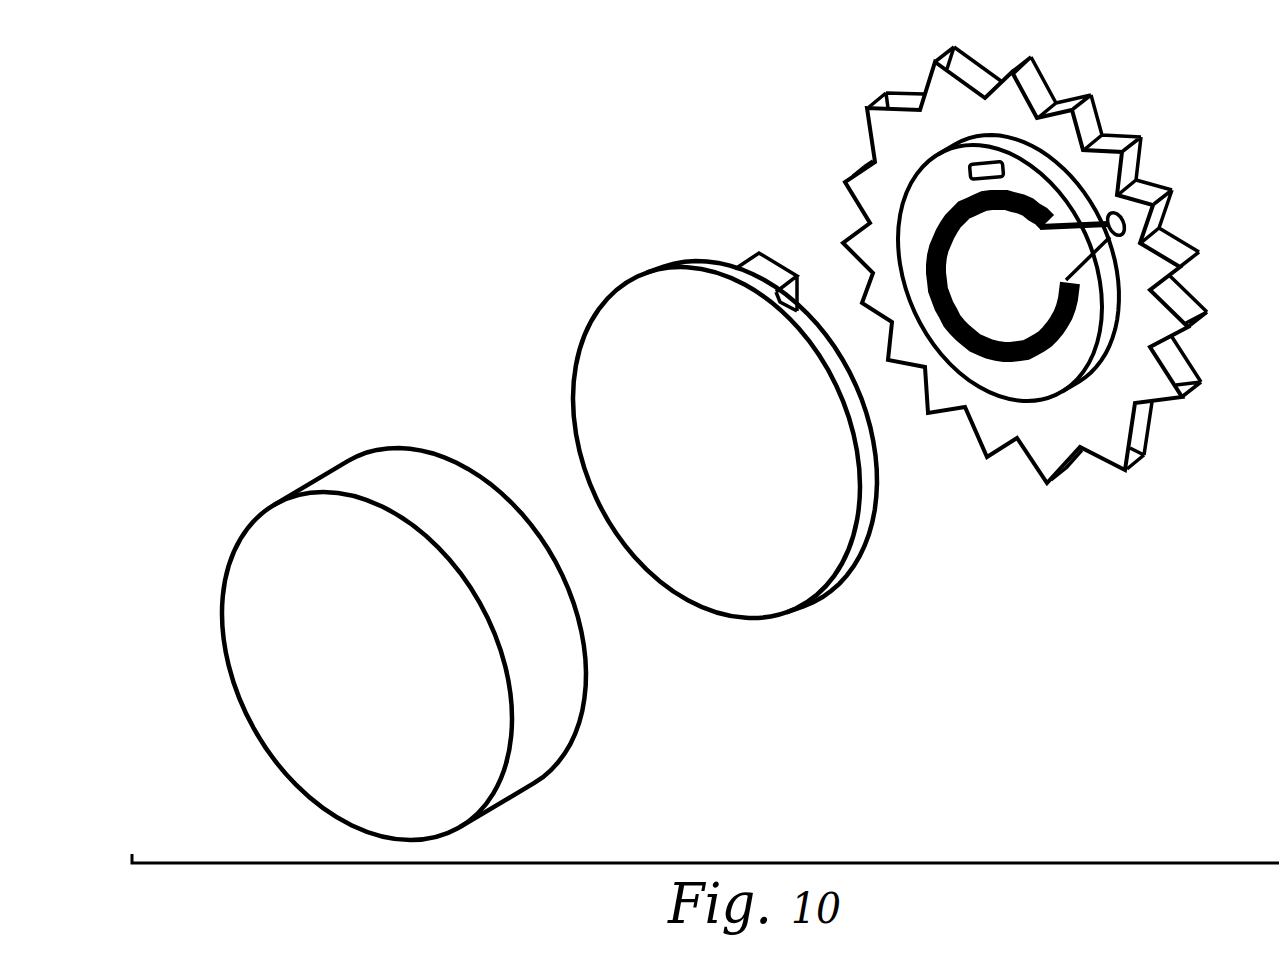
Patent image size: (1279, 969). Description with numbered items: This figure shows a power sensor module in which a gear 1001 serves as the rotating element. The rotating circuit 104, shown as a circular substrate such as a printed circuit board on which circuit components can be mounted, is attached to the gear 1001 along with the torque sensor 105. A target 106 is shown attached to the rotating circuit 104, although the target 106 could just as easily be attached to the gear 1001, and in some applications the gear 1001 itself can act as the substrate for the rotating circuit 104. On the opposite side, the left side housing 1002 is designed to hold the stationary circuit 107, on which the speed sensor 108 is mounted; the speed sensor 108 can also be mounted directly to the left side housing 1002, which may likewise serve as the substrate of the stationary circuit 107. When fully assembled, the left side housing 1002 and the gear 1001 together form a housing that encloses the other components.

The rotating circuit 104 is at (1022, 388).
The torque sensor 105 is at (1128, 223).
The target 106 is at (972, 170).
The stationary circuit 107 is at (803, 578).
The speed sensor 108 is at (757, 268).
The gear 1001 is at (1160, 390).
The left side housing 1002 is at (358, 477).